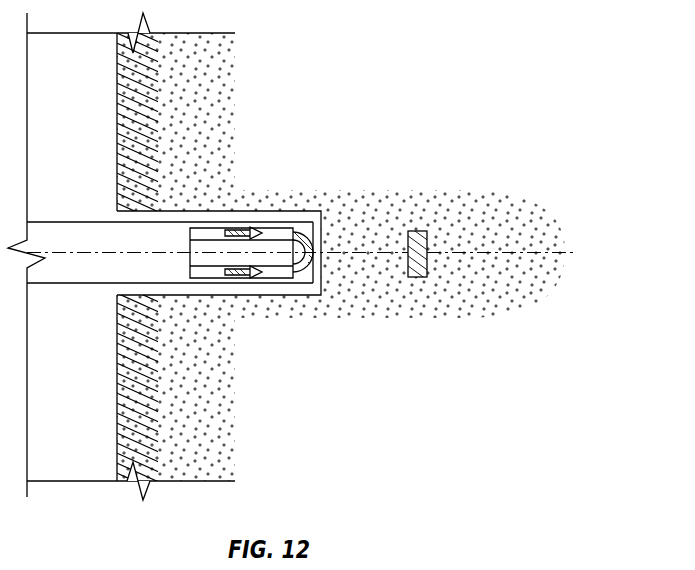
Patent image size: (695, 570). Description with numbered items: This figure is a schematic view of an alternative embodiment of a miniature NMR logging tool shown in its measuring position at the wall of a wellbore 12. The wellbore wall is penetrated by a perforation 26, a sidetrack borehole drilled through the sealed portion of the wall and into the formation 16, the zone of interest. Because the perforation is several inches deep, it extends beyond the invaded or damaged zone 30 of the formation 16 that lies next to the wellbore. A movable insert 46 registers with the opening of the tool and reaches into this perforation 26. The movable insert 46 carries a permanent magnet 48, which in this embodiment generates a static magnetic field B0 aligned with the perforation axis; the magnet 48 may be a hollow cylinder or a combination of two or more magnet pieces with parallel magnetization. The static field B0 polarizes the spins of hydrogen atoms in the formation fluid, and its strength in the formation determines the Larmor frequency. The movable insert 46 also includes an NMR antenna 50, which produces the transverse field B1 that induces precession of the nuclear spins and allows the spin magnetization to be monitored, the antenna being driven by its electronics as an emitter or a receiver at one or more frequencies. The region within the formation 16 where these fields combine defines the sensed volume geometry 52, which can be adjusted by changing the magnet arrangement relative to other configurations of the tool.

The wellbore 12 is at (87, 101).
The formation 16 is at (233, 407).
The perforation 26 is at (308, 211).
The invaded zone 30 is at (118, 411).
The movable insert 46 is at (86, 286).
The permanent magnet 48 is at (213, 227).
The NMR antenna 50 is at (305, 280).
The sensed volume geometry 52 is at (418, 278).
The static magnetic field B0 is at (236, 227).
The transverse field B1 is at (417, 270).